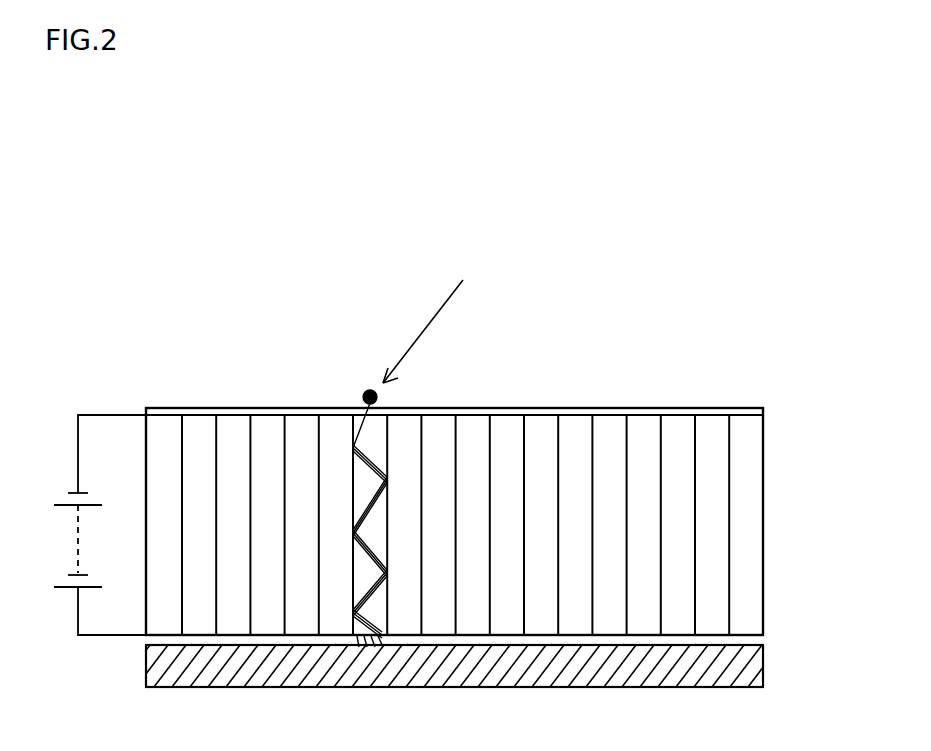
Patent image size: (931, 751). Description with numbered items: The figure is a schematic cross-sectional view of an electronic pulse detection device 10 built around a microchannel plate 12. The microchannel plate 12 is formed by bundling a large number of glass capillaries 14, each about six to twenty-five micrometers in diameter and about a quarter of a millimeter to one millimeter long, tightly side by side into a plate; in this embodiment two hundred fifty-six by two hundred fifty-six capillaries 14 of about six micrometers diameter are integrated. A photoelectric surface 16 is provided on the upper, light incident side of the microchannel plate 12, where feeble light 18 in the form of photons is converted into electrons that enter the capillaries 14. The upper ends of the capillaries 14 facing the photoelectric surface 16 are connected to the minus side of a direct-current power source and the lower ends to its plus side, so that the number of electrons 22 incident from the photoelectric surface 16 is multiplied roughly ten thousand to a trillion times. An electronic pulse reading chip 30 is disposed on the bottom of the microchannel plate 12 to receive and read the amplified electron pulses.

The electronic pulse detection device 10 is at (217, 345).
The microchannel plate 12 is at (780, 462).
The glass capillaries 14 is at (265, 425).
The photoelectric surface 16 is at (505, 408).
The feeble light 18 is at (370, 394).
The electrons 22 is at (390, 432).
The electronic pulse reading chip 30 is at (146, 655).